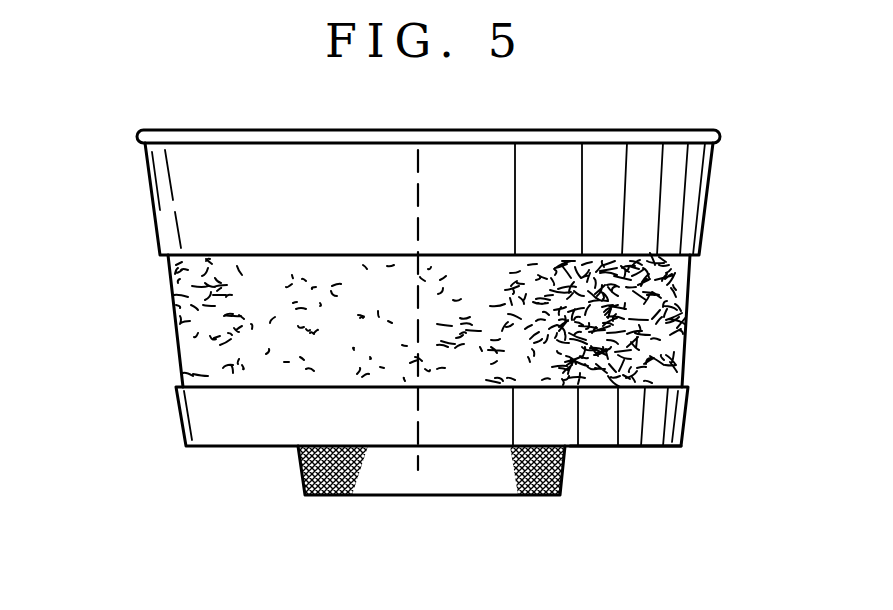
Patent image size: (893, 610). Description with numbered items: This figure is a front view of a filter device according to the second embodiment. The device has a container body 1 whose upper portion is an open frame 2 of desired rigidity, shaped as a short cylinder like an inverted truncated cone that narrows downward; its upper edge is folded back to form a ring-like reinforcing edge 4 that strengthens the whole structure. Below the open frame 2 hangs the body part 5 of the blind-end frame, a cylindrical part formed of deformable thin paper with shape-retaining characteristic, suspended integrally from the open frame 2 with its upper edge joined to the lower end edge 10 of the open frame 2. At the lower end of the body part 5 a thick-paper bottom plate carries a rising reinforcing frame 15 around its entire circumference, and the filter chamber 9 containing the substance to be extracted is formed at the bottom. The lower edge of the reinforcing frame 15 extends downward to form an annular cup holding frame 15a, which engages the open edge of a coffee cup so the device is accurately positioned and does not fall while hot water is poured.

The container body 1 is at (146, 294).
The open frame 2 is at (690, 217).
The ring-like reinforcing edge 4 is at (601, 132).
The body part 5 is at (657, 335).
The filter chamber 9 is at (498, 498).
The lower end edge 10 is at (652, 258).
The rising reinforcing frame 15 is at (685, 413).
The annular cup holding frame 15a is at (640, 448).